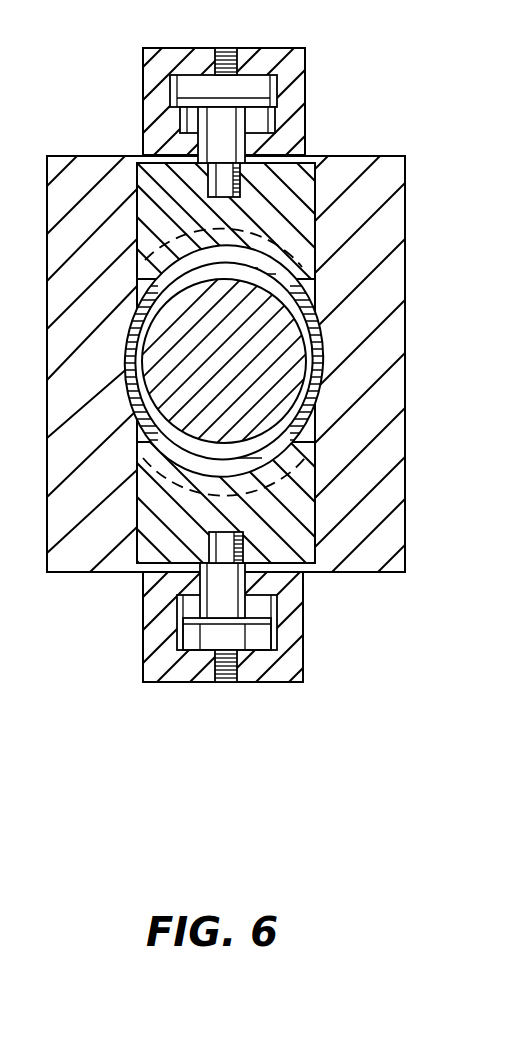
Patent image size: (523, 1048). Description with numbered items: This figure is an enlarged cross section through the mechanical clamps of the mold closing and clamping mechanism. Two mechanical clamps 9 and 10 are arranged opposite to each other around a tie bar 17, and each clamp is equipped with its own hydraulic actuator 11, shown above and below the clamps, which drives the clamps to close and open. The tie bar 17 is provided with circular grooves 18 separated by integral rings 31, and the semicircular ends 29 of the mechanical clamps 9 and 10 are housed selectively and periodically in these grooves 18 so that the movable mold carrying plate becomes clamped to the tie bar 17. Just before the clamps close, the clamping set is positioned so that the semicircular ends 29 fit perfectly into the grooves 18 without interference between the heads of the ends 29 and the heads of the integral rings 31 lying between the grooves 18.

The mechanical clamp 9 is at (297, 187).
The mechanical clamp 10 is at (307, 573).
The hydraulic actuator 11 is at (236, 76).
The tie bar 17 is at (298, 348).
The circular groove 18 is at (310, 390).
The semicircular end 29 is at (300, 258).
The integral ring 31 is at (313, 418).